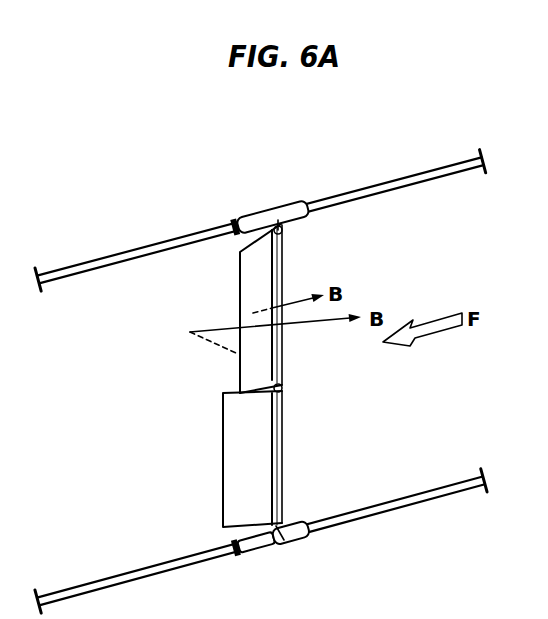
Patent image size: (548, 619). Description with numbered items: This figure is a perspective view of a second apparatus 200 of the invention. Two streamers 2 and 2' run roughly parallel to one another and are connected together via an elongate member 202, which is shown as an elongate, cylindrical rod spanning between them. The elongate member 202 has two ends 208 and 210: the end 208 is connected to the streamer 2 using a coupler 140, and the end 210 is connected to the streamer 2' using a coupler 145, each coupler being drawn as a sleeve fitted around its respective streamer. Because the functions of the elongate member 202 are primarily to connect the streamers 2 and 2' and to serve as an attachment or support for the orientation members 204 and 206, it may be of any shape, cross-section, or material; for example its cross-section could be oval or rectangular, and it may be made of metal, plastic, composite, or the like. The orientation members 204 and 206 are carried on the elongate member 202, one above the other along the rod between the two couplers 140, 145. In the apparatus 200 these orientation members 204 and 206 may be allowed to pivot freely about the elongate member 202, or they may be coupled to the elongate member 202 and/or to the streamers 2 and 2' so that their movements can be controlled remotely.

The second apparatus 200 is at (181, 185).
The streamer 2 is at (260, 198).
The streamer 2' is at (261, 521).
The coupler 140 is at (267, 210).
The coupler 145 is at (292, 524).
The orientation member 204 is at (255, 272).
The orientation member 206 is at (238, 452).
The end of elongate member 208 is at (287, 234).
The elongate member 202 is at (282, 388).
The end of elongate member 210 is at (281, 548).